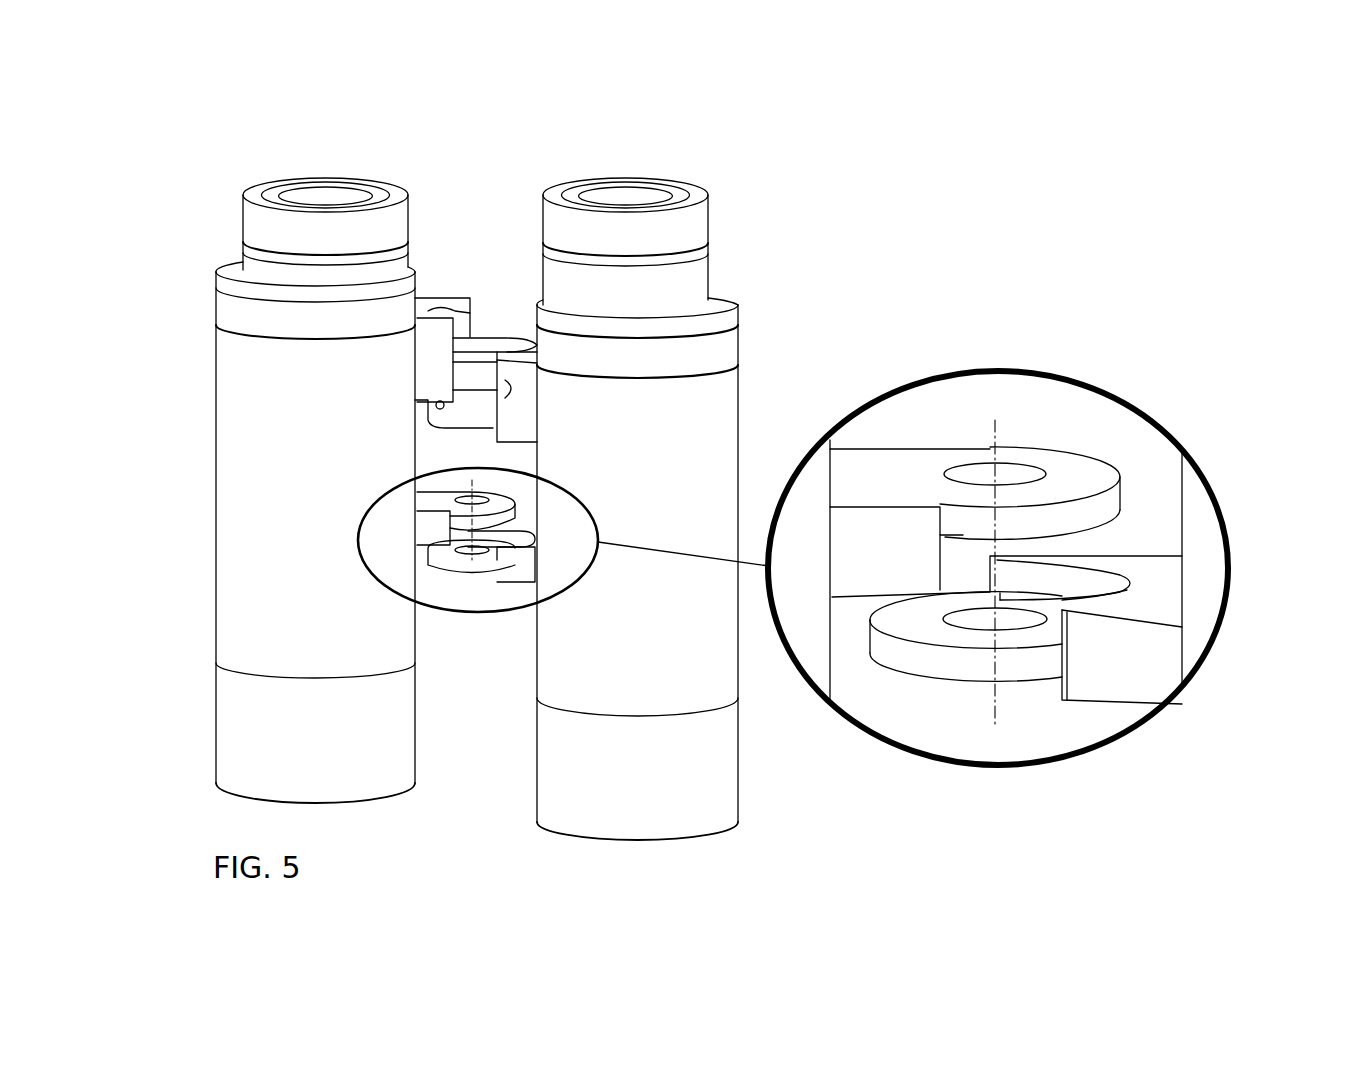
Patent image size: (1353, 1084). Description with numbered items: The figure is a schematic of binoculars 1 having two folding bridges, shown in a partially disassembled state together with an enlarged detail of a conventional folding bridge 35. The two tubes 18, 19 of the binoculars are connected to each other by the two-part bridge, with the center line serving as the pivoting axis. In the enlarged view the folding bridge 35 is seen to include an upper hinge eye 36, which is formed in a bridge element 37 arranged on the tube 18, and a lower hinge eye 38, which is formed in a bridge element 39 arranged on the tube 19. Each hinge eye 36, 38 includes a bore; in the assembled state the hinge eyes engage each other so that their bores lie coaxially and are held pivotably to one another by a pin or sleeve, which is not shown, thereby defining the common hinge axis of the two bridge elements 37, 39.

The binoculars 1 is at (697, 176).
The tube 18 is at (302, 394).
The tube 19 is at (712, 400).
The folding bridge 35 is at (360, 545).
The upper hinge eye 36 is at (1012, 465).
The bridge element 37 is at (893, 470).
The lower hinge eye 38 is at (990, 630).
The bridge element 39 is at (1157, 592).